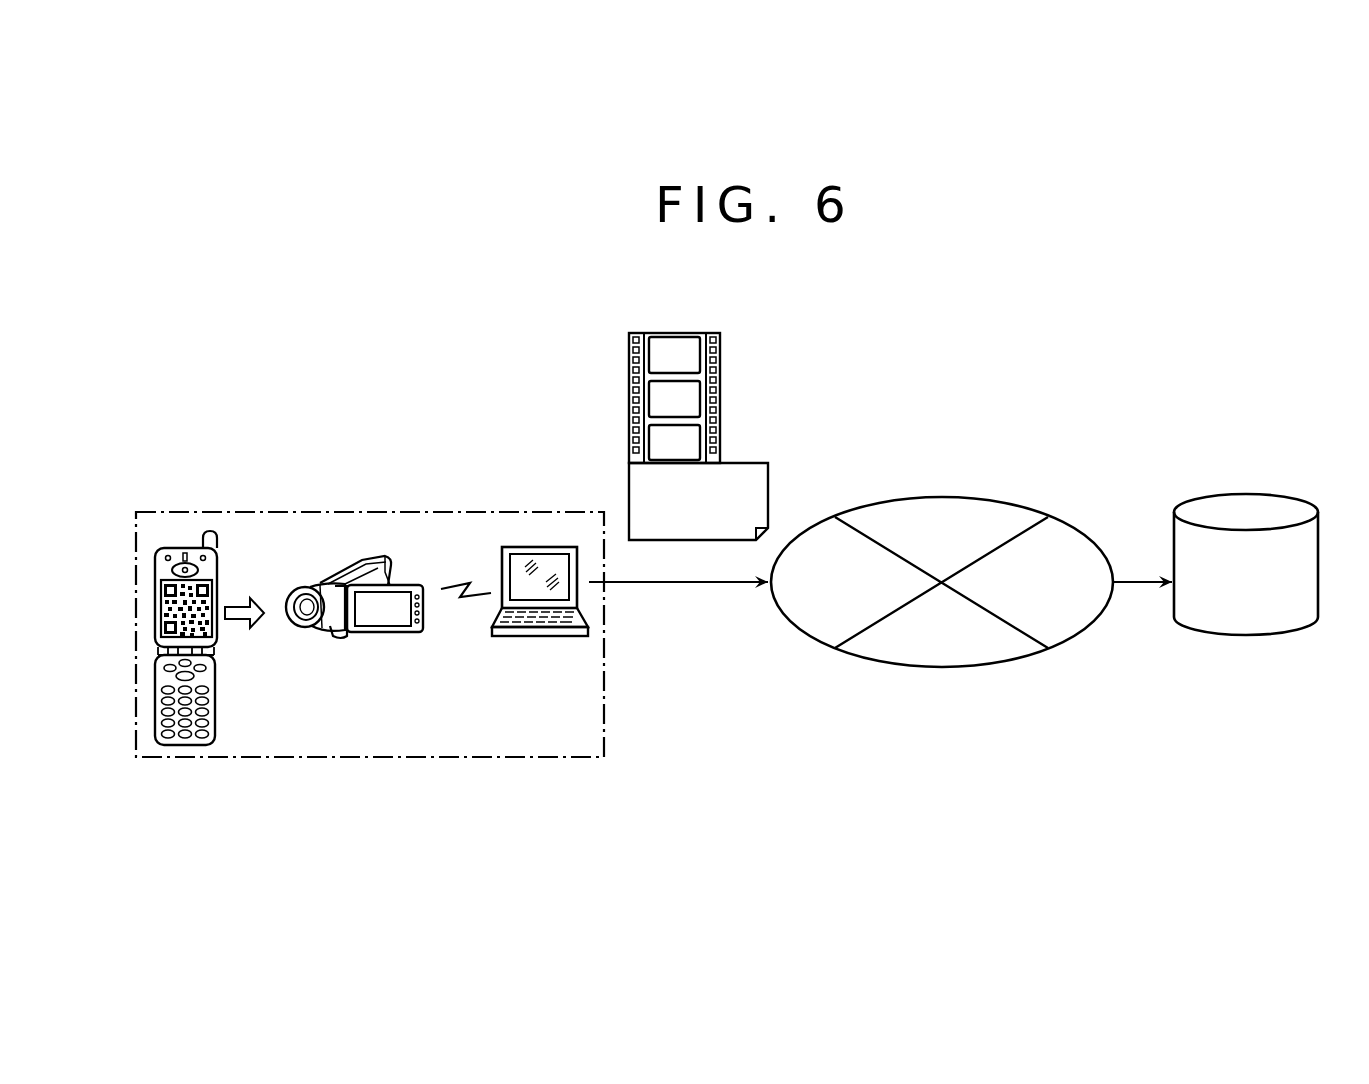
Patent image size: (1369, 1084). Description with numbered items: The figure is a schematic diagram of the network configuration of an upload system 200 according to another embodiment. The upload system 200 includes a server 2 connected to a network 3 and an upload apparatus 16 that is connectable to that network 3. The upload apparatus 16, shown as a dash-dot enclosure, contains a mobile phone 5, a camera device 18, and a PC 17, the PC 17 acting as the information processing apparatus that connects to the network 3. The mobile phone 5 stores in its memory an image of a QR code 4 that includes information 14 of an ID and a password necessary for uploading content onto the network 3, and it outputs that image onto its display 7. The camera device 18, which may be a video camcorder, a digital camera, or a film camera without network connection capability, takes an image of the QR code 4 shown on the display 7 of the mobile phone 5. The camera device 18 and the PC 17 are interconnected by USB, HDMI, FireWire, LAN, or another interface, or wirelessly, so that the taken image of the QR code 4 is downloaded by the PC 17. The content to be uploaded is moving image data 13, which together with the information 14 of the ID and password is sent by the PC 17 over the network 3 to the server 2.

The upload system 200 is at (1004, 372).
The upload apparatus 16 is at (240, 511).
The mobile phone 5 is at (186, 745).
The display 7 is at (167, 582).
The QR code 4 is at (167, 612).
The camera device 18 is at (330, 562).
The PC (Personal Computer) 17 is at (537, 546).
The moving image data 13 is at (721, 350).
The information of an ID and a password 14 is at (769, 473).
The network 3 is at (943, 667).
The server 2 is at (1249, 635).